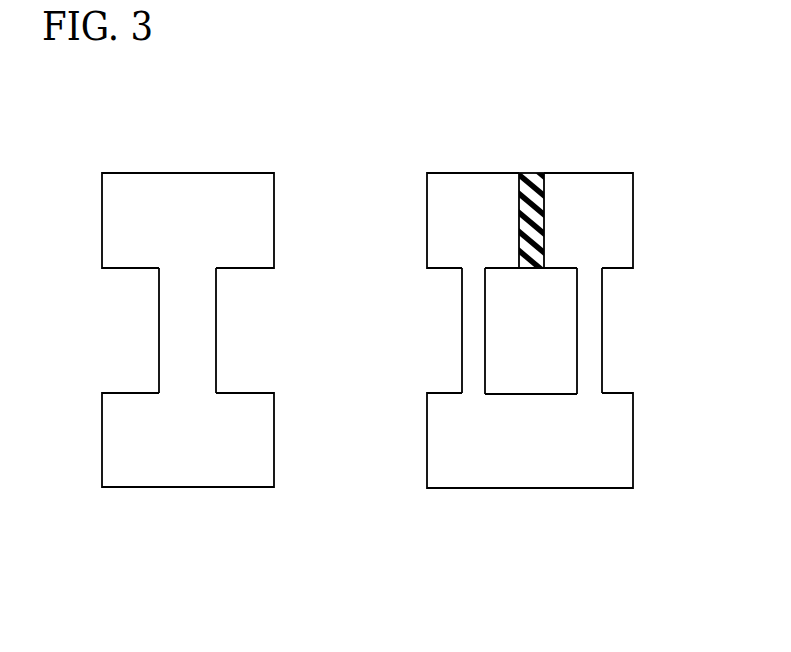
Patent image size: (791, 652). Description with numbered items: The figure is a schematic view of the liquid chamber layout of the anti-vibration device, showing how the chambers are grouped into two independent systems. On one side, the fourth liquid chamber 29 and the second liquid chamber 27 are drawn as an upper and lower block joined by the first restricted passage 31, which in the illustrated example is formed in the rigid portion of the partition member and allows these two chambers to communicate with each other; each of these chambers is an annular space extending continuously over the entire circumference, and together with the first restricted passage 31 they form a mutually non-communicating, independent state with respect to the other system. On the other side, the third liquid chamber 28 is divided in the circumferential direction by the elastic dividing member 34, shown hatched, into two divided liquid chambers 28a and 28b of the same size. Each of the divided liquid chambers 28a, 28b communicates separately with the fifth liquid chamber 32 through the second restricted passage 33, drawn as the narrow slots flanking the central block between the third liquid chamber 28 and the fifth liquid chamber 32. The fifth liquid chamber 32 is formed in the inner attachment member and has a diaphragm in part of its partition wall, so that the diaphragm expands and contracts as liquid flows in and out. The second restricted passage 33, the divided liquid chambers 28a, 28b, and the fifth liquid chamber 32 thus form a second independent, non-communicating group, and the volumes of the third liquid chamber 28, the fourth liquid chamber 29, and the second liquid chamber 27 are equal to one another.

The second liquid chamber 27 is at (190, 465).
The third liquid chamber 28 is at (628, 172).
The divided liquid chamber 28a is at (584, 190).
The divided liquid chamber 28b is at (467, 190).
The fourth liquid chamber 29 is at (190, 195).
The first restricted passage 31 is at (197, 331).
The fifth liquid chamber 32 is at (532, 466).
The second restricted passage 33 is at (470, 330).
The elastic dividing member 34 is at (533, 190).